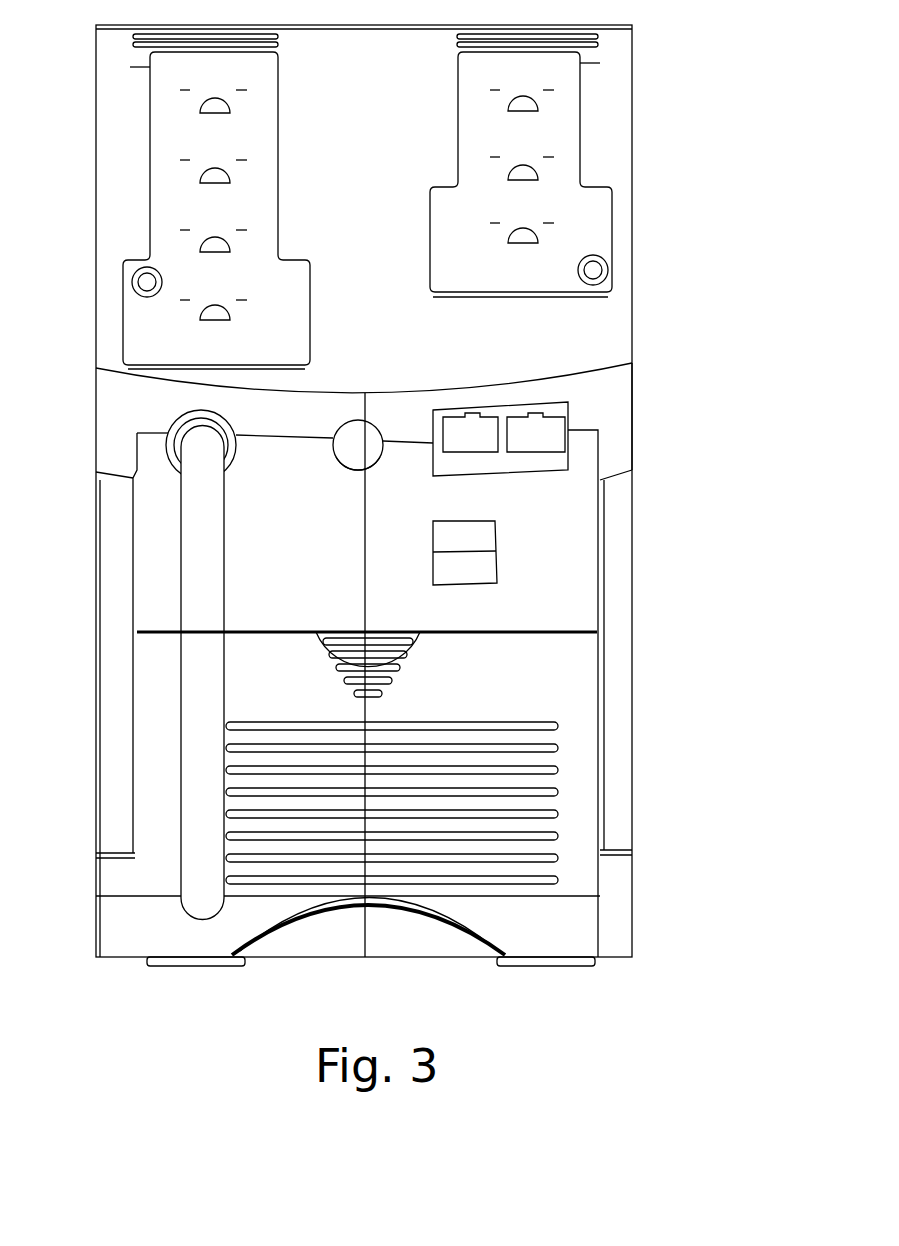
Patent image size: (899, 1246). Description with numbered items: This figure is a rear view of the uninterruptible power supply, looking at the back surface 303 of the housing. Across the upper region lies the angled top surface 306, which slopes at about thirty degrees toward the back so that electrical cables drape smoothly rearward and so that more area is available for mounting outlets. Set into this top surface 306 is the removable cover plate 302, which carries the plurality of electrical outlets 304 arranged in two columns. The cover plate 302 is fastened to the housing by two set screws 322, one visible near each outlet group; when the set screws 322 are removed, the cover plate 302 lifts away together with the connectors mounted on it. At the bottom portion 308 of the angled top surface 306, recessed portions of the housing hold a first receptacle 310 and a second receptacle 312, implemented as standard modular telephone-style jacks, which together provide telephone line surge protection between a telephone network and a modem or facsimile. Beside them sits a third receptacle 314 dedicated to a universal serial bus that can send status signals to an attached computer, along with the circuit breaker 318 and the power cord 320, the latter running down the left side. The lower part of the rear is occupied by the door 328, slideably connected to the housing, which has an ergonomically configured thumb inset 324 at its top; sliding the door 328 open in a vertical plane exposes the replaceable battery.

The cover plate 302 is at (733, 388).
The back surface 303 is at (622, 413).
The electrical outlets 304 is at (488, 218).
The top surface 306 is at (452, 359).
The bottom portion 308 is at (355, 420).
The first receptacle 310 is at (462, 445).
The second receptacle 312 is at (537, 440).
The third receptacle 314 is at (472, 575).
The circuit breaker 318 is at (340, 462).
The power cord 320 is at (215, 600).
The set screws 322 is at (138, 295).
The thumb inset 324 is at (410, 680).
The door 328 is at (586, 716).